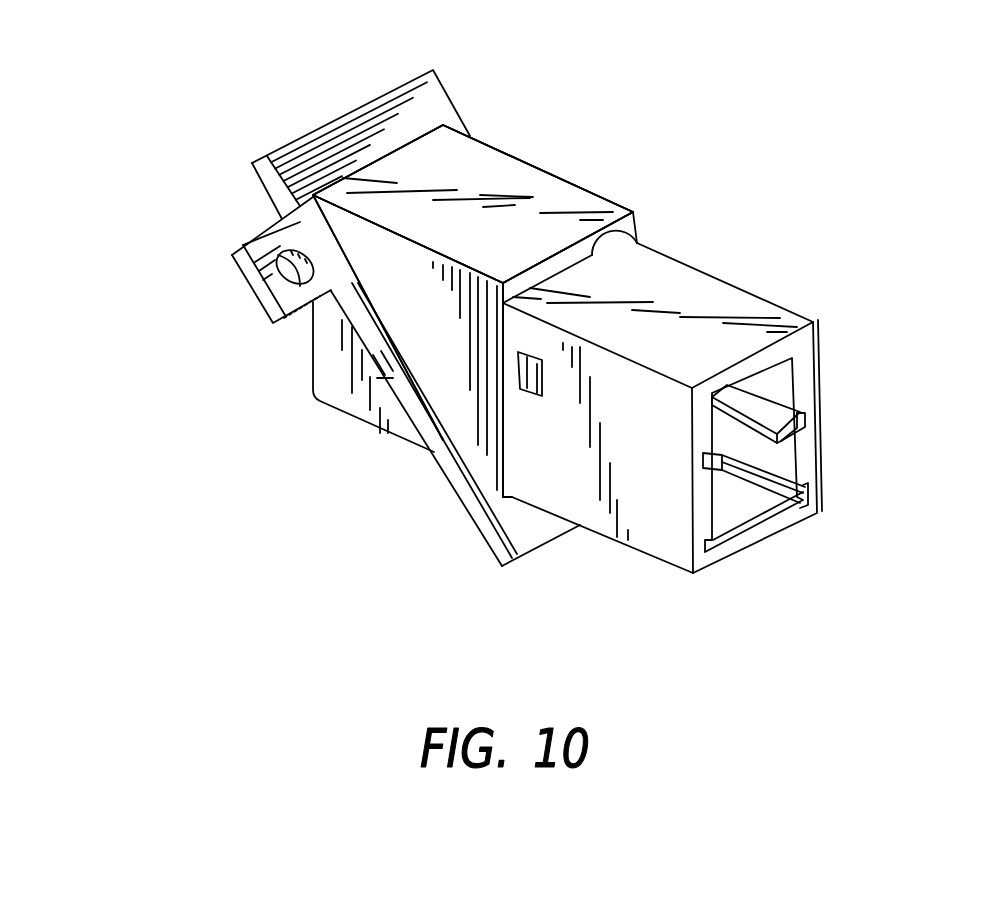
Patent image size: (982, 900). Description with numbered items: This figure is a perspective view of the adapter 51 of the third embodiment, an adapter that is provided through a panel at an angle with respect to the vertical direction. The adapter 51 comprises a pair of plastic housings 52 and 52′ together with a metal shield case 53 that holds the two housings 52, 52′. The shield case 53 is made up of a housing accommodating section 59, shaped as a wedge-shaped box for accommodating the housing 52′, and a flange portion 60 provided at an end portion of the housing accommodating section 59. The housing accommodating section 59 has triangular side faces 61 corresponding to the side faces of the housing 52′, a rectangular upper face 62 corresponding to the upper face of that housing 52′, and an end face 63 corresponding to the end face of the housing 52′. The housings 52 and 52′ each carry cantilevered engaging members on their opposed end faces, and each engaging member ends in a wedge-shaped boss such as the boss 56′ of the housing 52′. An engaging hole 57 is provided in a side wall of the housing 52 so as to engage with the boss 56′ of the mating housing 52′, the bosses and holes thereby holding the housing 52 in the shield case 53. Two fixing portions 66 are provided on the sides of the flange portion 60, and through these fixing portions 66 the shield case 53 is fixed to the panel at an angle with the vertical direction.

The adapter 51 is at (215, 197).
The housing 52 is at (717, 283).
The housing 52′ is at (337, 408).
The shield case 53 is at (613, 172).
The wedge-shaped boss 56′ is at (520, 372).
The engaging hole 57 is at (533, 393).
The housing accommodating section 59 is at (492, 140).
The flange portion 60 is at (425, 113).
The triangular side face 61 is at (431, 333).
The rectangular upper face 62 is at (520, 182).
The end face 63 is at (648, 252).
The fixing portion 66 is at (272, 300).